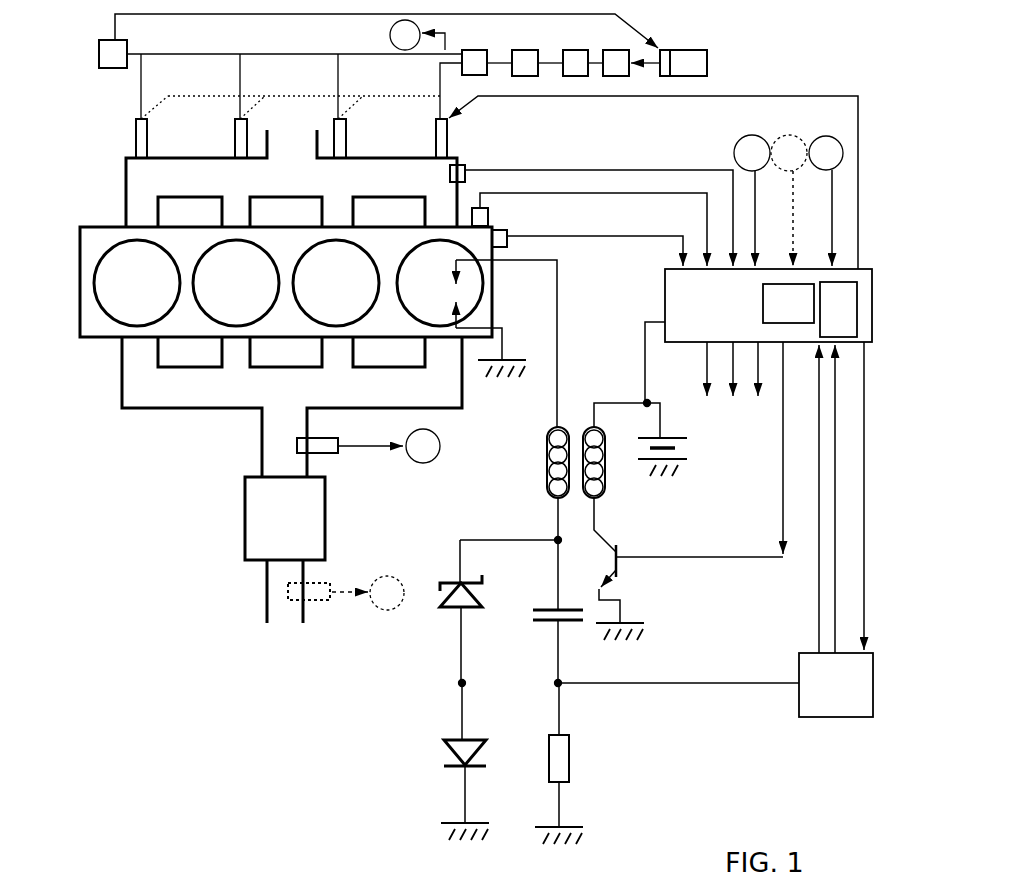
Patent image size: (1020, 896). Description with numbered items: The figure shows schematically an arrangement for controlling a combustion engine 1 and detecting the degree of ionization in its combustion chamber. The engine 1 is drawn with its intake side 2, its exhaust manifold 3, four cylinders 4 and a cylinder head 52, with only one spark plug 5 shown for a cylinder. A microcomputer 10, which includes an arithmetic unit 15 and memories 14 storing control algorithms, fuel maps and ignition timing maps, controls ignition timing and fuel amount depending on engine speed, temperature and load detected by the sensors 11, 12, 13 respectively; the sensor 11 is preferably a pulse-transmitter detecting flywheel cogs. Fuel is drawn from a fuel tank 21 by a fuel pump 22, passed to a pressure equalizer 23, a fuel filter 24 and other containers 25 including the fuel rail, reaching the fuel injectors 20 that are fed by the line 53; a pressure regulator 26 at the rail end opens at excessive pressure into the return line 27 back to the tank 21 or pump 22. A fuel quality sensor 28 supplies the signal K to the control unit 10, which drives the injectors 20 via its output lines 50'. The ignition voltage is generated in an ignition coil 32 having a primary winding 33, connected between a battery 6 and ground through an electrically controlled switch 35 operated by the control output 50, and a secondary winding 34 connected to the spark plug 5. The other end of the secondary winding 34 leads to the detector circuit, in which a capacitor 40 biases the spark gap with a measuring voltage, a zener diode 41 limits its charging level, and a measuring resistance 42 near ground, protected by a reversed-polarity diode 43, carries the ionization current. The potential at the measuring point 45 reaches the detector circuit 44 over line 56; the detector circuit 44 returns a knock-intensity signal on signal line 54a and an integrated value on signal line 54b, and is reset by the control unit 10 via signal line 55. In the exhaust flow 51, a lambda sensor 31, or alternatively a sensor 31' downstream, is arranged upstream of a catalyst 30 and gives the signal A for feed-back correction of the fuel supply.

The combustion engine 1 is at (76, 240).
The intake manifold 2 is at (152, 191).
The exhaust manifold 3 is at (137, 388).
The cylinders 4 is at (145, 287).
The spark plug 5 is at (454, 291).
The battery 6 is at (675, 437).
The microcomputer 10 is at (690, 312).
The sensor 11 is at (507, 243).
The sensor 12 is at (488, 214).
The sensor 13 is at (467, 168).
The memories 14 is at (852, 313).
The arithmetic unit 15 is at (804, 317).
The fuel injectors 20 is at (147, 137).
The fuel tank 21 is at (676, 68).
The fuel pump 22 is at (676, 47).
The pressure equalizer 23 is at (614, 54).
The fuel filter 24 is at (576, 52).
The containers 25 is at (524, 52).
The pressure regulator 26 is at (101, 58).
The return line 27 is at (248, 15).
The fuel quality sensor 28 is at (478, 52).
The catalyst 30 is at (293, 522).
The lambda sensor 31 is at (368, 460).
The optional exhaust gas sensor 31' is at (346, 605).
The ignition coil 32 is at (578, 419).
The primary winding 33 is at (600, 490).
The secondary winding 34 is at (548, 462).
The electrically controlled switch 35 is at (618, 553).
The capacitor 40 is at (551, 607).
The zener diode 41 is at (455, 609).
The measuring resistance 42 is at (571, 742).
The diode 43 is at (451, 757).
The detector circuit 44 is at (857, 695).
The measuring point 45 is at (556, 687).
The control output 50 is at (717, 449).
The injector control lines 50' is at (736, 401).
The exhaust gas flow 51 is at (281, 688).
The cylinder head 52 is at (305, 167).
The injector control line 53 is at (702, 98).
The signal line 54a is at (818, 560).
The signal line 54b is at (836, 600).
The signal line 55 is at (862, 560).
The line 56 is at (698, 675).